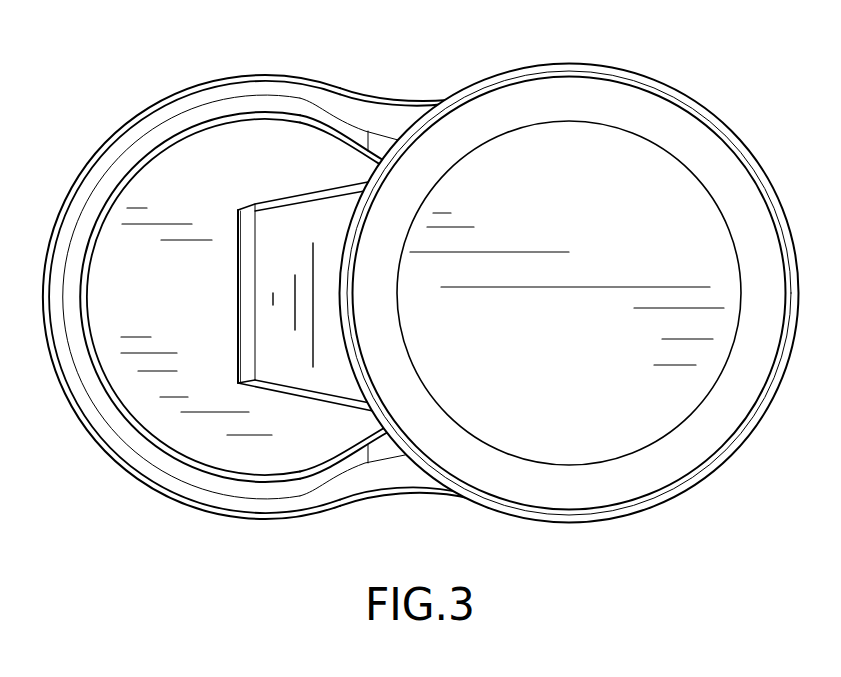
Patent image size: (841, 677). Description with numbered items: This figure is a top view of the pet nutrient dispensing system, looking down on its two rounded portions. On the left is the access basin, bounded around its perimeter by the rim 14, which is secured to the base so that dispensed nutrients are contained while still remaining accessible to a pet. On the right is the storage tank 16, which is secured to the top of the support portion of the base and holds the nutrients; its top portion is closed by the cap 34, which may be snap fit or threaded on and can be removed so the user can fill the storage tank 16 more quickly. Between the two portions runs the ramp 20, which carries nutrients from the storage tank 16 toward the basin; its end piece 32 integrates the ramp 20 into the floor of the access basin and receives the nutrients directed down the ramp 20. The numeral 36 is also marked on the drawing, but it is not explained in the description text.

The rim 14 is at (158, 122).
The storage tank 16 is at (598, 98).
The ramp 20 is at (275, 336).
The end piece 32 is at (243, 280).
The cap 34 is at (665, 200).
The opening 36 is at (253, 157).